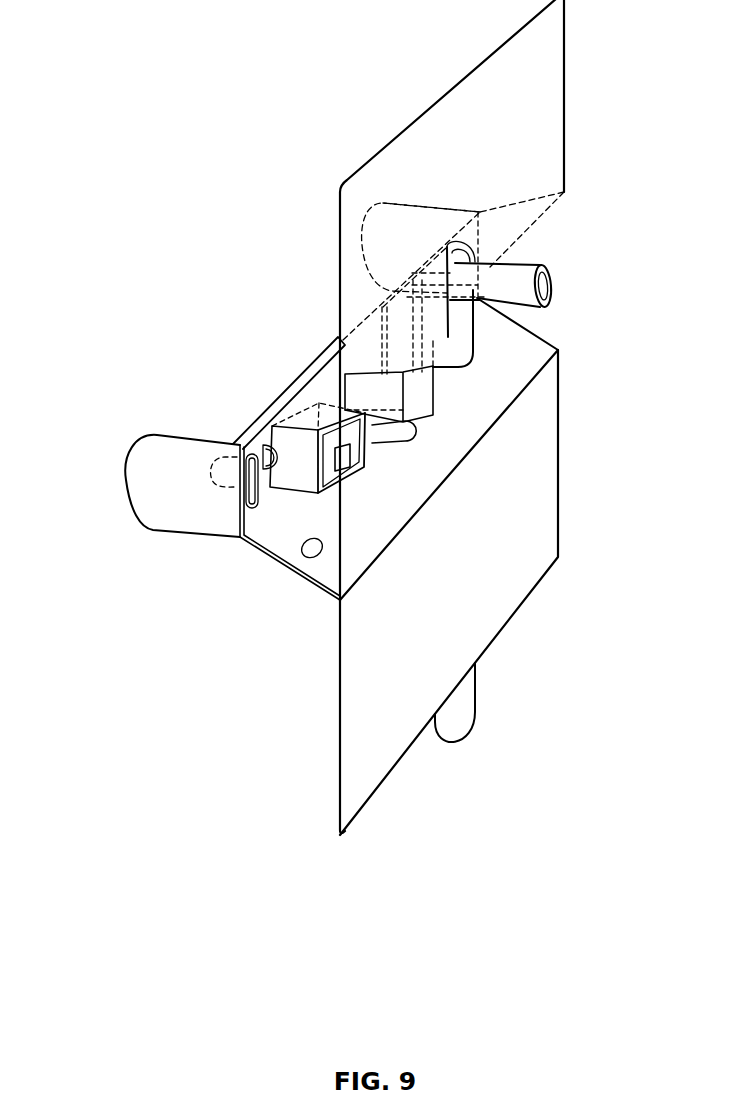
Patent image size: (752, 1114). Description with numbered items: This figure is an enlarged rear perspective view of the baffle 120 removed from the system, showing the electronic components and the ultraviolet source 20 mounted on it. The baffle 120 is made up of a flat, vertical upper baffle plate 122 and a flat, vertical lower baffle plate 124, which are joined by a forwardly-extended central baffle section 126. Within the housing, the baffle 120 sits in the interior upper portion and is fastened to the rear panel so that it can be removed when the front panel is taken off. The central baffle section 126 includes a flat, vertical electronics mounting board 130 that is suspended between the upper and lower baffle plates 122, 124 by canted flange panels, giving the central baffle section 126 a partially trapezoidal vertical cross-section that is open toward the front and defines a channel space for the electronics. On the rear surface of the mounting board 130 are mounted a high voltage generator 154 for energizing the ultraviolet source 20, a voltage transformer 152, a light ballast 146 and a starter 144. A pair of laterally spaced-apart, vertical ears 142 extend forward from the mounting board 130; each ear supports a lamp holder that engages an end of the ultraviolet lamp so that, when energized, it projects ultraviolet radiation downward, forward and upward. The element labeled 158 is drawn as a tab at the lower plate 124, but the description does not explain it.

The ultraviolet source 20 is at (275, 407).
The baffle 120 is at (398, 54).
The upper baffle plate 122 is at (533, 98).
The lower baffle plate 124 is at (511, 553).
The central baffle section 126 is at (603, 275).
The electronics mounting board 130 is at (262, 542).
The ears 142 is at (163, 478).
The starter 144 is at (482, 262).
The light ballast 146 is at (472, 345).
The voltage transformer 152 is at (372, 430).
The high voltage generator 154 is at (342, 480).
The lower tab 158 is at (453, 713).